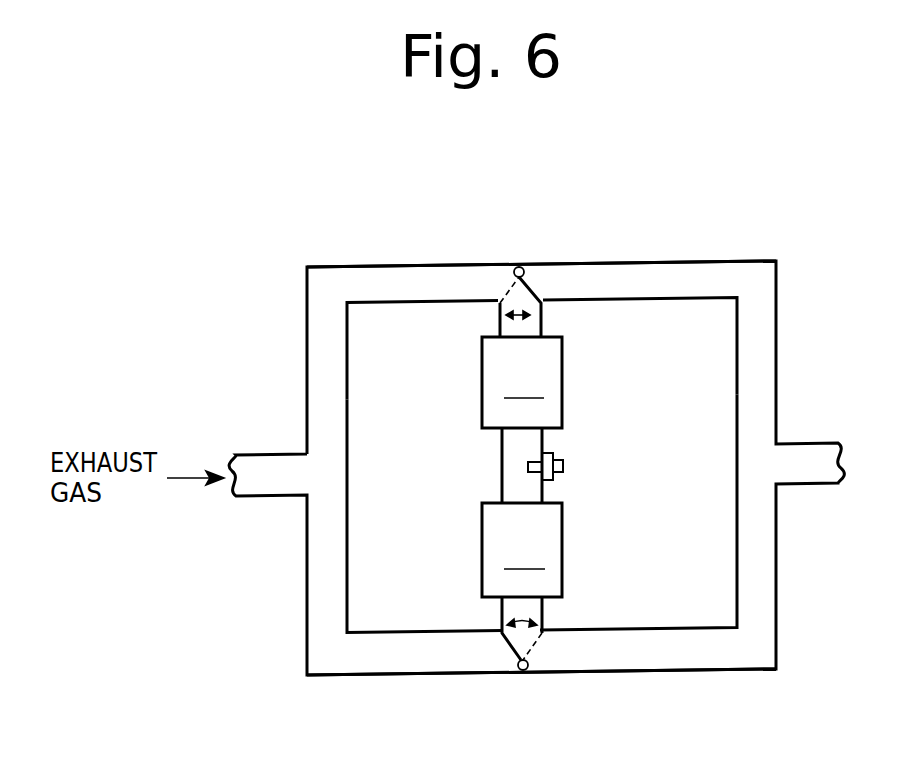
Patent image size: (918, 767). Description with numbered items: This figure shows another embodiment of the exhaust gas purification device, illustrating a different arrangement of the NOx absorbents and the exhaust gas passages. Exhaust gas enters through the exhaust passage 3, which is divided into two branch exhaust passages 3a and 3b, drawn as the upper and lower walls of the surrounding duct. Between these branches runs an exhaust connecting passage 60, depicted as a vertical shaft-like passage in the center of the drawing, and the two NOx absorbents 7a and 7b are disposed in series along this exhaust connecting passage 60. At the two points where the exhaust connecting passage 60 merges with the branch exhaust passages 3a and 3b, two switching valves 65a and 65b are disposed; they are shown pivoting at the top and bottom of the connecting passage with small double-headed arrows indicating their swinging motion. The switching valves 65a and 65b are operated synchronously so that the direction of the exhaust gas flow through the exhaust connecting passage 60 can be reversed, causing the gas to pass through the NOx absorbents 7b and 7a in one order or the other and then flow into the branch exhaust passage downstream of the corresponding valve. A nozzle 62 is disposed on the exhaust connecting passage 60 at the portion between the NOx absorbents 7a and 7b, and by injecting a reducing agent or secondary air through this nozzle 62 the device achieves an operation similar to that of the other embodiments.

The exhaust passage 3 is at (268, 496).
The branch exhaust passage 3a is at (412, 267).
The branch exhaust passage 3b is at (417, 676).
The exhaust connecting passage 60 is at (500, 615).
The nozzle 62 is at (563, 461).
The switching valve 65a is at (538, 290).
The switching valve 65b is at (512, 656).
The NOx absorbent 7a is at (522, 382).
The NOx absorbent 7b is at (522, 550).